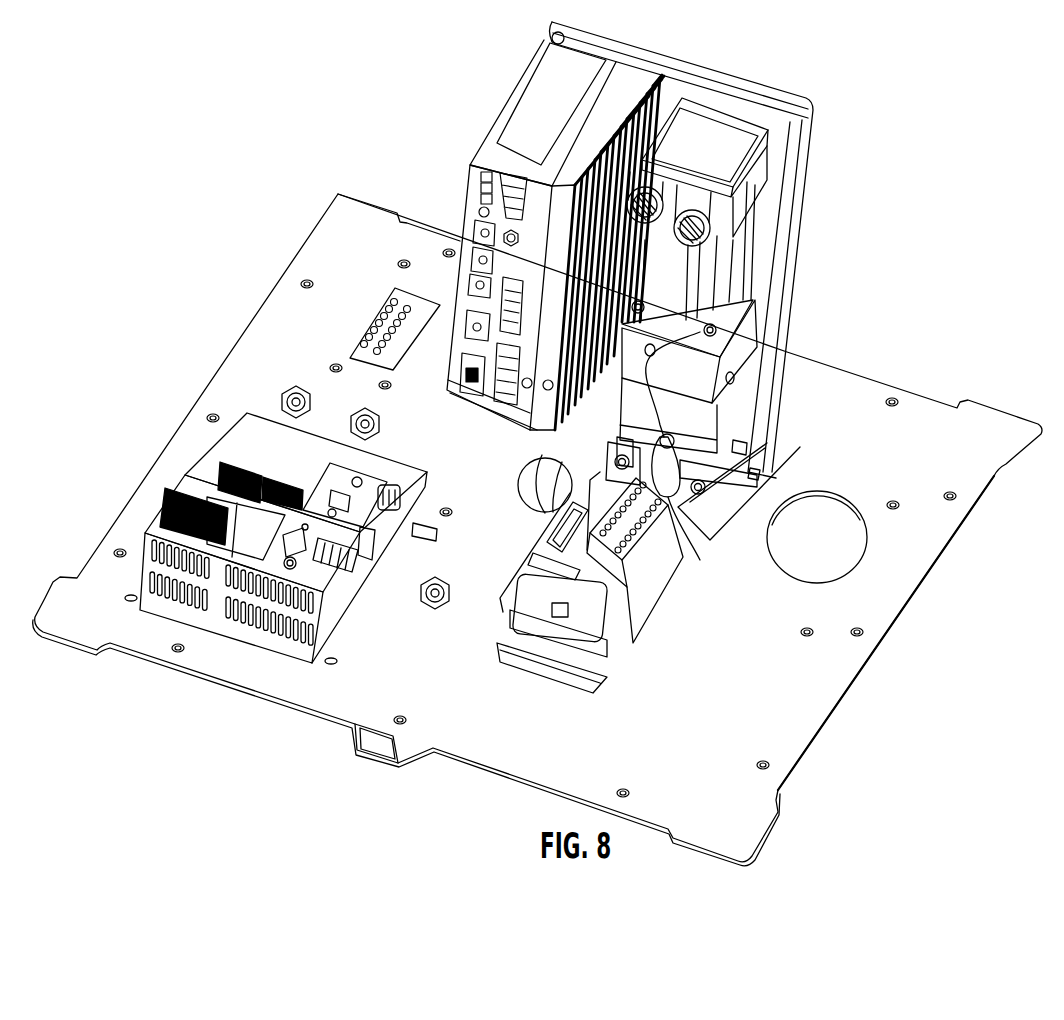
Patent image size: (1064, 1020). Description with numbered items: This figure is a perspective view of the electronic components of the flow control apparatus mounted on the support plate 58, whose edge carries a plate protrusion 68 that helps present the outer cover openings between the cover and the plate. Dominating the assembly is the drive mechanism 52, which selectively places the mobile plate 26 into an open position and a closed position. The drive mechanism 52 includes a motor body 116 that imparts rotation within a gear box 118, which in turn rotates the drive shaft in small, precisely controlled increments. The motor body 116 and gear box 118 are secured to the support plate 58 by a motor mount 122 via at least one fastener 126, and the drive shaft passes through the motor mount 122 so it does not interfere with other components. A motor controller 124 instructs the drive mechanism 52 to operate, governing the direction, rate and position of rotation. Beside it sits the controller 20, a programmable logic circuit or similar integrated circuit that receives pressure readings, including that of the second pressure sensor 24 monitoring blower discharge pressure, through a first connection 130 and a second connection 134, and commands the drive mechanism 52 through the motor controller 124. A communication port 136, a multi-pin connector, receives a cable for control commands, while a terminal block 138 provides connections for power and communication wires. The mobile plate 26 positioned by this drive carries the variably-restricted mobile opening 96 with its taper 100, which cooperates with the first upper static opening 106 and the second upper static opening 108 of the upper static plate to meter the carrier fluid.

The controller 20 is at (162, 503).
The second pressure sensor 24 is at (847, 517).
The mobile plate 26 is at (523, 497).
The drive mechanism 52 is at (718, 135).
The support plate 58 is at (870, 392).
The plate protrusion 68 is at (340, 202).
The variably-restricted mobile opening 96 is at (560, 470).
The taper 100 is at (540, 490).
The first upper static opening 106 is at (533, 518).
The second upper static opening 108 is at (790, 587).
The motor body 116 is at (752, 233).
The gear box 118 is at (737, 380).
The motor mount 122 is at (757, 470).
The motor controller 124 is at (493, 127).
The fastener 126 is at (704, 489).
The first connection 130 is at (362, 412).
The second connection 134 is at (293, 388).
The communication port 136 is at (387, 313).
The terminal block 138 is at (640, 615).